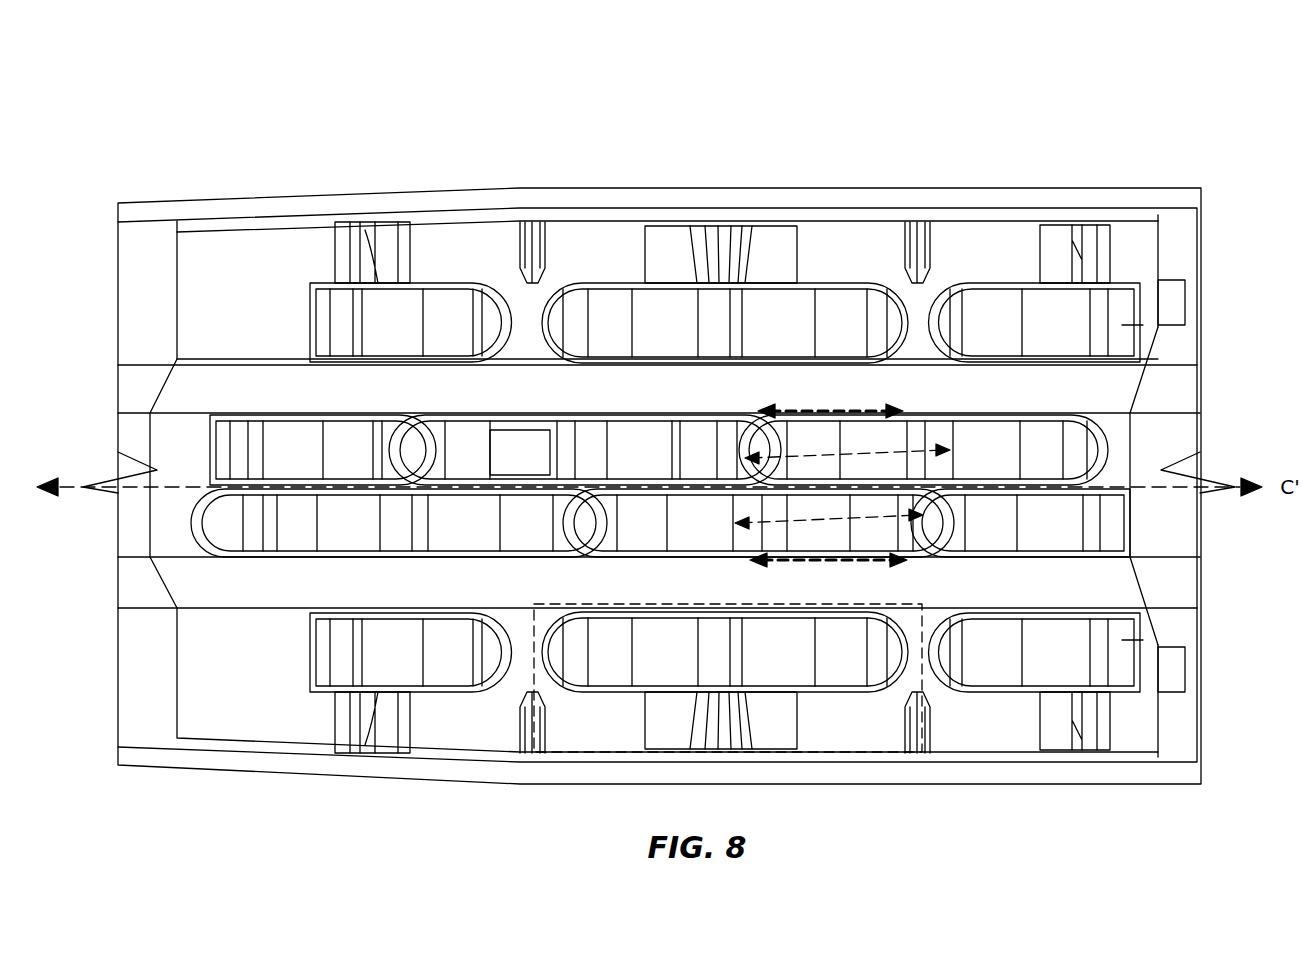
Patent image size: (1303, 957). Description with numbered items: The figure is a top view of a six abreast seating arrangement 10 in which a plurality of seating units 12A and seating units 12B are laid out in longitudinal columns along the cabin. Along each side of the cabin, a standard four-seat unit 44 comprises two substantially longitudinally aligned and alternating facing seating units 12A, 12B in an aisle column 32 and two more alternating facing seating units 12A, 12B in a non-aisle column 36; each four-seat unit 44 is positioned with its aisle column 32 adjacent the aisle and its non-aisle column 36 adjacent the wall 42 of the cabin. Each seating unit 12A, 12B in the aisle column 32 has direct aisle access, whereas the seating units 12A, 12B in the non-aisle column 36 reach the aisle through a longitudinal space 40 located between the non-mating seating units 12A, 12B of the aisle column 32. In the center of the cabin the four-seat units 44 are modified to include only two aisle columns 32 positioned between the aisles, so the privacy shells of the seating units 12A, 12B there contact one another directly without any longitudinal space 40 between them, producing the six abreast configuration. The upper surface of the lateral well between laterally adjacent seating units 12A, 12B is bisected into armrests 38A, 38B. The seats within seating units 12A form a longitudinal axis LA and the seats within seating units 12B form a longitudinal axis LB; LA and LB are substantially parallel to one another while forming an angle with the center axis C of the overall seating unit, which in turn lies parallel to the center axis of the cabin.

The seating arrangement 10 is at (58, 170).
The seating unit 12A is at (447, 310).
The seating unit 12B is at (370, 235).
The aisle column 32 is at (1140, 320).
The non-aisle column 36 is at (1125, 257).
The armrest 38A is at (528, 523).
The armrest 38B is at (470, 488).
The longitudinal space 40 is at (914, 305).
The wall 42 is at (1030, 225).
The four-seat unit 44 is at (778, 754).
The longitudinal axis LA is at (927, 503).
The longitudinal axis LB is at (928, 440).
The center axis C is at (893, 408).